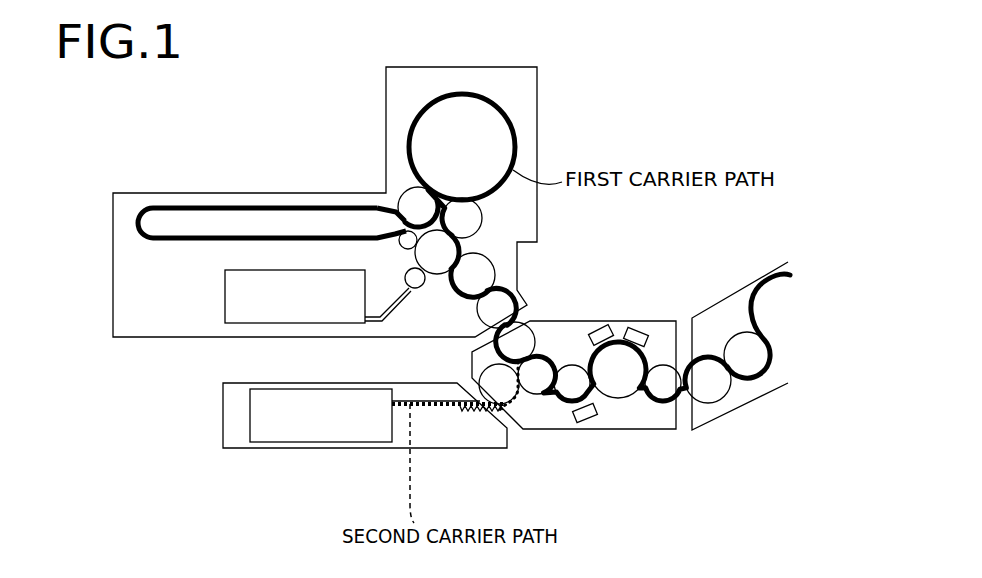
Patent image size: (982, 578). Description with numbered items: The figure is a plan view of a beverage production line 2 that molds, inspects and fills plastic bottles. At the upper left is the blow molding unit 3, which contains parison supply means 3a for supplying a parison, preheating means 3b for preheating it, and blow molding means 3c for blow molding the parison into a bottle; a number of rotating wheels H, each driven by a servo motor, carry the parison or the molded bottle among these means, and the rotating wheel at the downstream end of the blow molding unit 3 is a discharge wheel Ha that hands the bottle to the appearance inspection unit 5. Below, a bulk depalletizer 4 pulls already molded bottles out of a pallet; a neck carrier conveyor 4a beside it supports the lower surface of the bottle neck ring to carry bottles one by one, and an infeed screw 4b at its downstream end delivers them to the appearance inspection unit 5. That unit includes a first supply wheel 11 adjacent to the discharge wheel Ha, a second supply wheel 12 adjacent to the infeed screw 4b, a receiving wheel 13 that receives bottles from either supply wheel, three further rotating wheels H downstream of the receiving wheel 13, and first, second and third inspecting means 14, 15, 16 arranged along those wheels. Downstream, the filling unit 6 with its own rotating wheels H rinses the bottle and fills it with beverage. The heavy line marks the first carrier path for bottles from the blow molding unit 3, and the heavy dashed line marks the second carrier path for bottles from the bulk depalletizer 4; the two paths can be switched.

The beverage production line 2 is at (598, 63).
The blow molding unit 3 is at (418, 67).
The parison supply means 3a is at (287, 312).
The preheating means 3b is at (273, 210).
The blow molding means 3c is at (510, 118).
The bulk depalletizer 4 is at (318, 443).
The neck carrier conveyor 4a is at (425, 406).
The infeed screw 4b is at (476, 410).
The appearance inspection unit 5 is at (627, 429).
The filling unit 6 is at (742, 405).
The first supply wheel 11 is at (537, 356).
The second supply wheel 12 is at (513, 400).
The receiving wheel 13 is at (602, 326).
The first inspecting means 14 is at (587, 418).
The second inspecting means 15 is at (642, 327).
The third inspecting means 16 is at (677, 369).
The rotating wheel H is at (412, 203).
The discharge wheel Ha is at (500, 305).